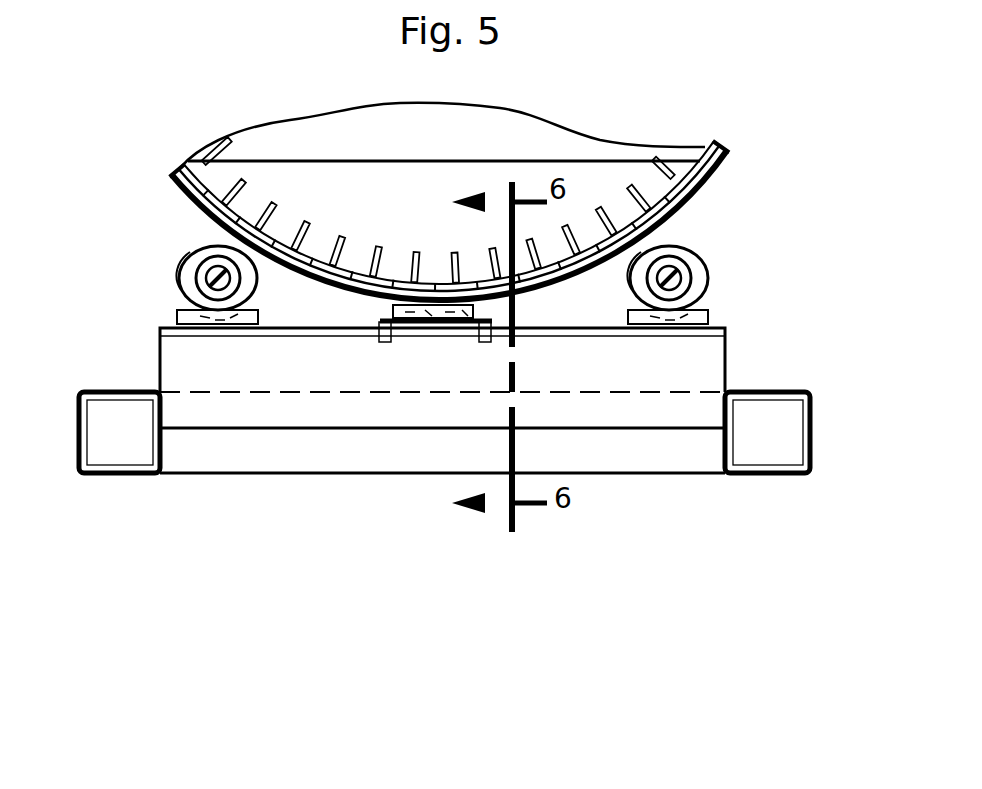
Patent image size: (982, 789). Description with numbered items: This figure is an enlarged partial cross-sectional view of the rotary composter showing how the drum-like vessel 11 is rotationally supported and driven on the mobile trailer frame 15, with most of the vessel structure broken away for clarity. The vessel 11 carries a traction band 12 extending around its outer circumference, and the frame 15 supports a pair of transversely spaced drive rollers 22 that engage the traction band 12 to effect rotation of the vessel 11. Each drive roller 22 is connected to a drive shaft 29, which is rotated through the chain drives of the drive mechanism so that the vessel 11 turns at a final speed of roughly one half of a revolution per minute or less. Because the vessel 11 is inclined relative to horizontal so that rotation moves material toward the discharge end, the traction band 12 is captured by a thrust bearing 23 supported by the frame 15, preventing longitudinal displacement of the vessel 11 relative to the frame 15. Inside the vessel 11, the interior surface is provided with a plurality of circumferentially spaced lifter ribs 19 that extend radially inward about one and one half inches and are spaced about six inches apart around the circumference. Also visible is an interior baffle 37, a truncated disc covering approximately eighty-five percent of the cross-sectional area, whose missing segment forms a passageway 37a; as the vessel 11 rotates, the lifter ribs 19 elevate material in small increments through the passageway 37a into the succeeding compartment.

The vessel 11 is at (715, 178).
The traction band 12 is at (693, 205).
The trailer frame 15 is at (775, 474).
The lifter ribs 19 is at (350, 262).
The drive rollers 22 is at (198, 246).
The thrust bearing 23 is at (375, 320).
The drive shafts 29 is at (206, 284).
The baffle 37 is at (323, 117).
The passageway 37a is at (337, 191).